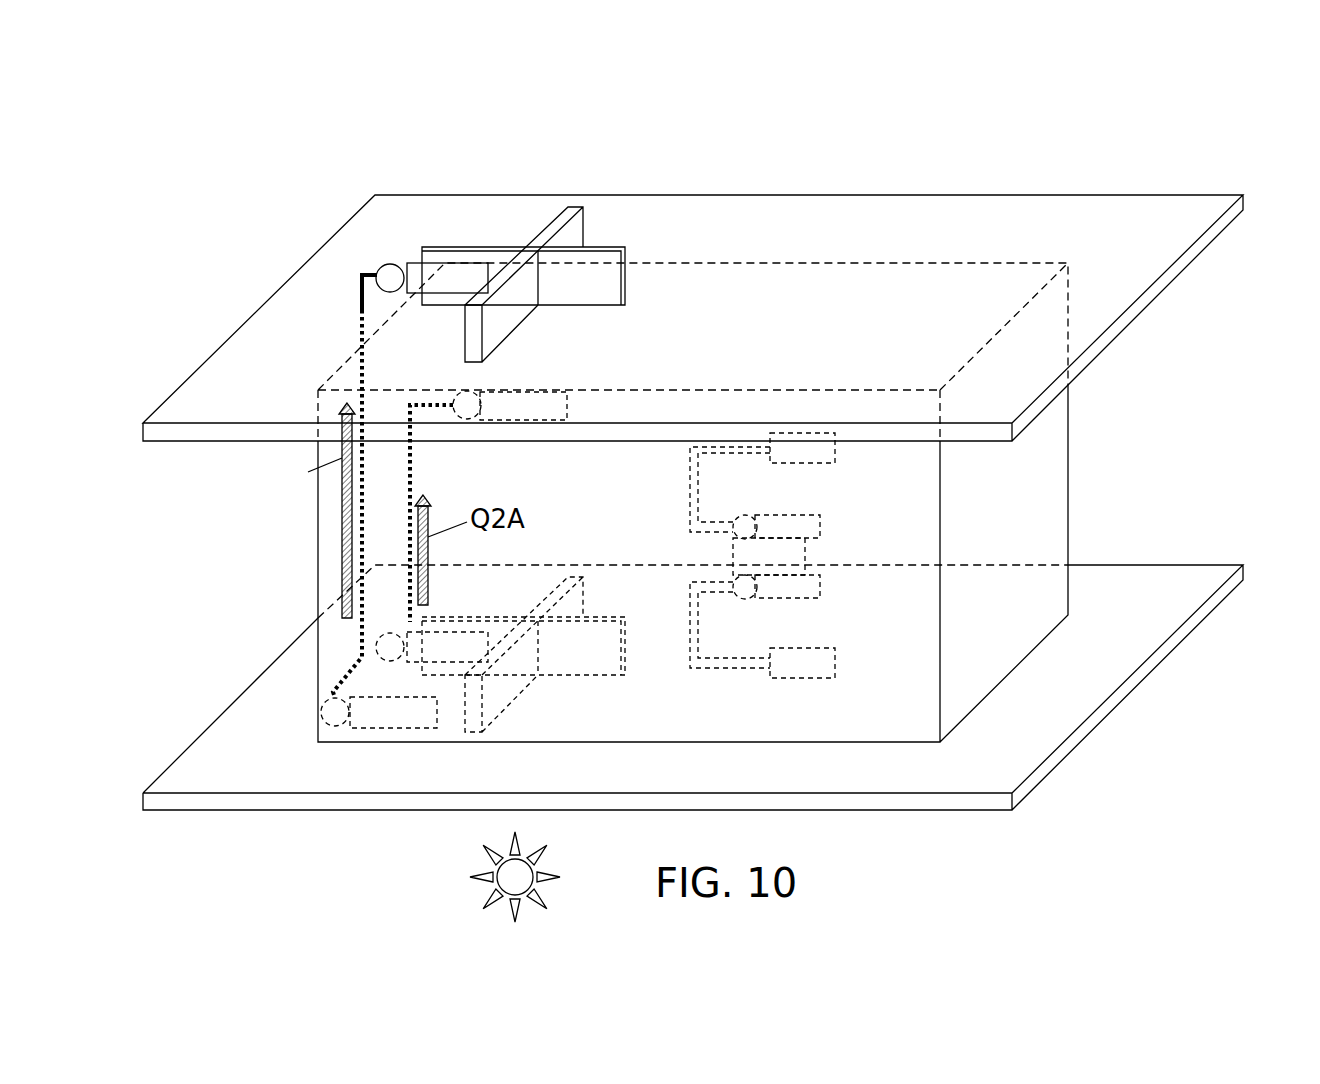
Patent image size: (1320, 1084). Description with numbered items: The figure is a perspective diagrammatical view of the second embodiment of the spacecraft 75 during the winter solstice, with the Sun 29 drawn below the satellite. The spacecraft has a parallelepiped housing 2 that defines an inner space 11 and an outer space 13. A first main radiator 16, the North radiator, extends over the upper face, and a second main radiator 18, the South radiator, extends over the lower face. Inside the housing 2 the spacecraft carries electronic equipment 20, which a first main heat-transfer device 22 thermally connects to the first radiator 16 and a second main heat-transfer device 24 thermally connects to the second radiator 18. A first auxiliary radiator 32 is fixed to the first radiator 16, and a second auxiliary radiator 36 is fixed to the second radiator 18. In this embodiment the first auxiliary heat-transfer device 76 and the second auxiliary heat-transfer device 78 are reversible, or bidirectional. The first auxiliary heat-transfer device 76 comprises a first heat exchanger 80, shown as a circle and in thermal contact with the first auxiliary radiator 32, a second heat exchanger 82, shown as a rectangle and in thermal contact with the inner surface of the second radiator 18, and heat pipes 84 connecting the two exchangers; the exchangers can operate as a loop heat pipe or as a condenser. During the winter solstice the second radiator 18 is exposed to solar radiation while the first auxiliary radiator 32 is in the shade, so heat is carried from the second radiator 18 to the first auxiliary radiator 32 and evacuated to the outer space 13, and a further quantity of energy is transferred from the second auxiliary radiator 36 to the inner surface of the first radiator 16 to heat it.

The housing 2 is at (1070, 522).
The inner space 11 is at (597, 540).
The outer space 13 is at (1263, 399).
The first main radiator 16 is at (1168, 208).
The second main radiator 18 is at (1142, 677).
The electronic equipment 20 is at (803, 555).
The first main heat-transfer device 22 is at (688, 488).
The second main heat-transfer device 24 is at (688, 602).
The Sun 29 is at (490, 875).
The first auxiliary radiator 32 is at (569, 205).
The second auxiliary radiator 36 is at (515, 703).
The spacecraft 75 is at (232, 827).
The first auxiliary heat-transfer device 76 is at (337, 557).
The second auxiliary heat-transfer device 78 is at (420, 483).
The first heat exchanger 80 is at (418, 272).
The second heat exchanger 82 is at (542, 402).
The heat pipes 84 is at (408, 547).